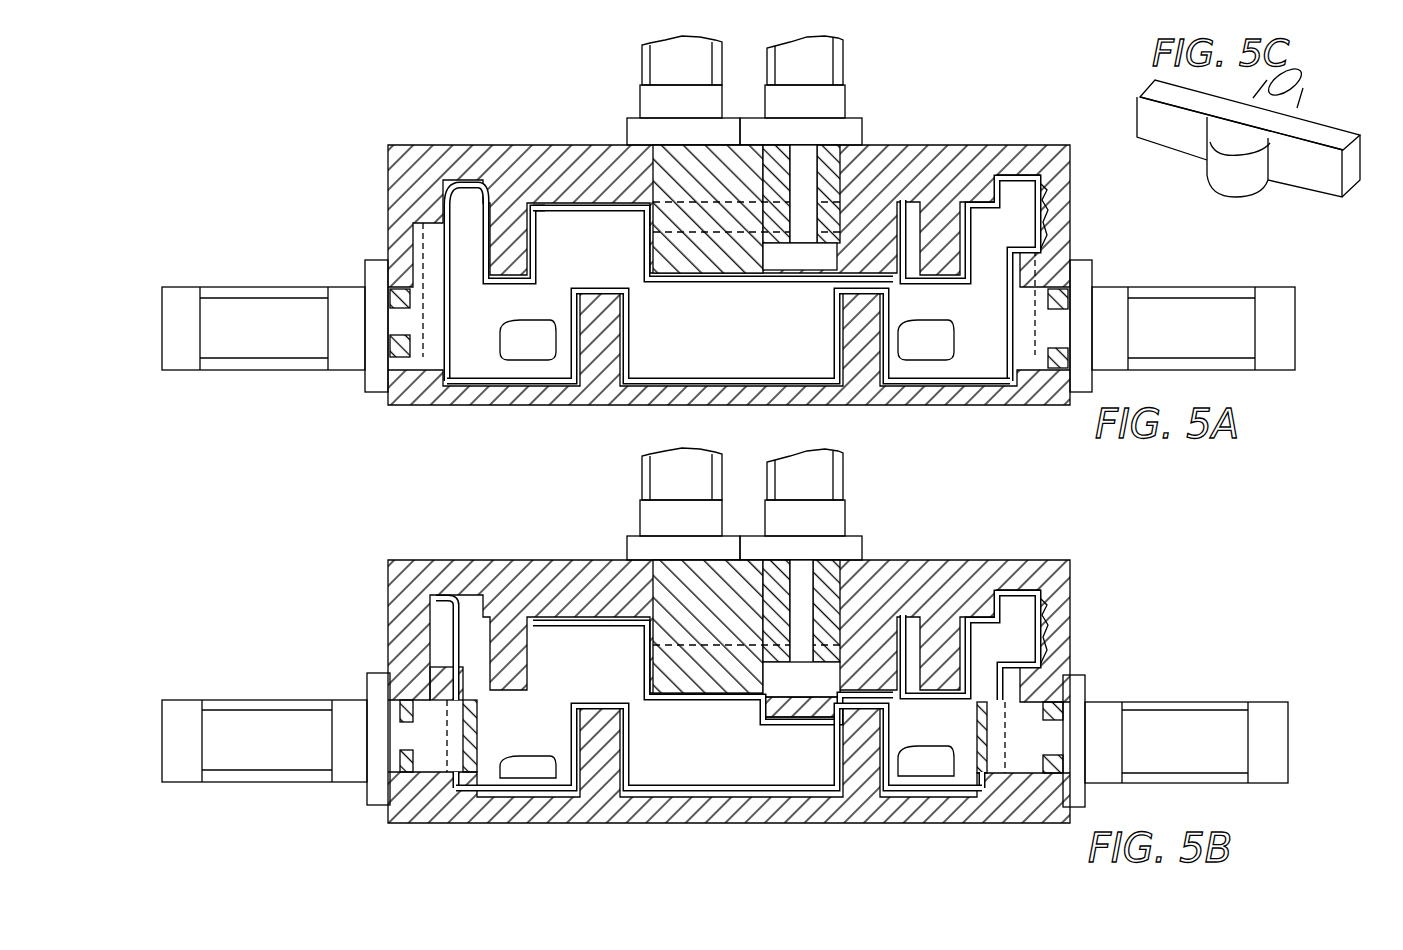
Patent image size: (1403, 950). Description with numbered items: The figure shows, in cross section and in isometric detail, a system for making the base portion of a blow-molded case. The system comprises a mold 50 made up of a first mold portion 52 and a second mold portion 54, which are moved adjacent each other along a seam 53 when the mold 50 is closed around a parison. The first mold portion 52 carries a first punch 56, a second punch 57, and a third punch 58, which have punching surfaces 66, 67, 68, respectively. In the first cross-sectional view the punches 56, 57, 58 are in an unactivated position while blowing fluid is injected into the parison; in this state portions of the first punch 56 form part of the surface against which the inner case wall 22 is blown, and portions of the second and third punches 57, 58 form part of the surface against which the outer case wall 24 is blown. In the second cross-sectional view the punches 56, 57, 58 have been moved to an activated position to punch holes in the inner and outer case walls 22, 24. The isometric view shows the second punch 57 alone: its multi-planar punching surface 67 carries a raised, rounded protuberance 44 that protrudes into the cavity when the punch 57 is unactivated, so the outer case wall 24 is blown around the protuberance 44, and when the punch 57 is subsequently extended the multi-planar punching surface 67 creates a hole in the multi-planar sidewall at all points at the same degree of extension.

In FIG. 5A, the inner case wall 22 is at (730, 287).
In FIG. 5B, the inner case wall 22 is at (718, 700).
In FIG. 5A, the outer case wall 24 is at (768, 378).
In FIG. 5B, the outer case wall 24 is at (755, 786).
In FIG. 5C, the raised, rounded protuberance 44 is at (1205, 197).
In FIG. 5A, the mold 50 is at (952, 124).
In FIG. 5A, the first mold portion 52 is at (1070, 165).
In FIG. 5A, the seam 53 is at (1062, 204).
In FIG. 5A, the second mold portion 54 is at (1070, 235).
In FIG. 5A, the first punch 56 is at (843, 72).
In FIG. 5B, the first punch 56 is at (843, 489).
In FIG. 5A, the second punch 57 is at (298, 287).
In FIG. 5B, the second punch 57 is at (335, 700).
In FIG. 5A, the third punch 58 is at (1175, 287).
In FIG. 5B, the third punch 58 is at (1145, 702).
In FIG. 5A, the punching surface 66 is at (795, 287).
In FIG. 5B, the punching surface 66 is at (812, 725).
In FIG. 5A, the punching surface 67 is at (450, 325).
In FIG. 5B, the punching surface 67 is at (496, 693).
In FIG. 5C, the punching surface 67 is at (1295, 155).
In FIG. 5A, the punching surface 68 is at (1005, 318).
In FIG. 5B, the punching surface 68 is at (985, 735).